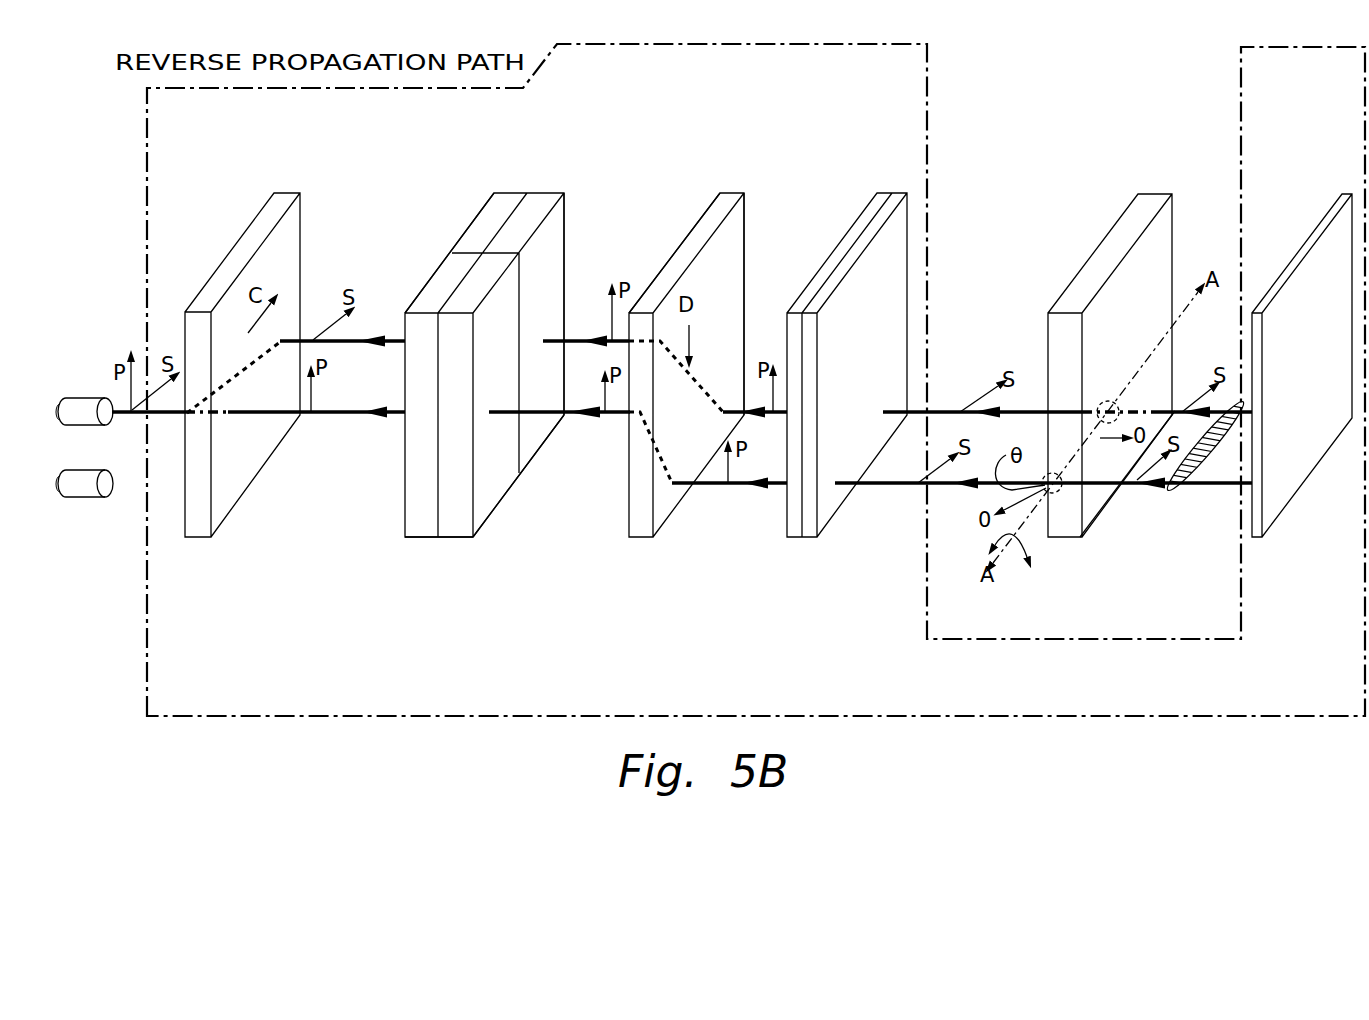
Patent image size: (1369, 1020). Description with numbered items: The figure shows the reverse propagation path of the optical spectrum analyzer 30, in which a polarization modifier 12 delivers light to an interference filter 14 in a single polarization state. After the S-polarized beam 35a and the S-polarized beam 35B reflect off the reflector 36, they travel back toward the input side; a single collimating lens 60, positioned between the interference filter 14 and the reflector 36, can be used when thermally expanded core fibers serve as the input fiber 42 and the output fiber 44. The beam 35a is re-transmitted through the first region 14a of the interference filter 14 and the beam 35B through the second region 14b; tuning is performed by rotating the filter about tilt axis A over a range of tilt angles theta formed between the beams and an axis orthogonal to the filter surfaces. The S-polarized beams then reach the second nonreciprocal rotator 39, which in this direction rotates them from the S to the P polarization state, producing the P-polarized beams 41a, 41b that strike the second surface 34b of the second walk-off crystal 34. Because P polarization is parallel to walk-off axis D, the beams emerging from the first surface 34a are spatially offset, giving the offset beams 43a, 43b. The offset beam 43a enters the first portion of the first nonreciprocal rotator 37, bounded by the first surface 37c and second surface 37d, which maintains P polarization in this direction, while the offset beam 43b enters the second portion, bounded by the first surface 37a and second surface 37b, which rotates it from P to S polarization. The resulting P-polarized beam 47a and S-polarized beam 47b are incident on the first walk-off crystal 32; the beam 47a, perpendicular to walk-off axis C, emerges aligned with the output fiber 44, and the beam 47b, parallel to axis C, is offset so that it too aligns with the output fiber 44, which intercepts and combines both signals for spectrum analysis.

The polarization modifier 12 is at (145, 664).
The interference filter 14 is at (1105, 256).
The first region of the interference filter 14a is at (1062, 490).
The second region of the interference filter 14b is at (1110, 400).
The optical spectrum analyzer 30 is at (1102, 60).
The first walk-off crystal 32 is at (243, 253).
The second walk-off crystal 34 is at (643, 540).
The first surface of the second walk-off crystal 34a is at (703, 207).
The second surface of the second walk-off crystal 34b is at (741, 216).
The S-polarized beam 35a is at (1226, 488).
The S-polarized beam 35B is at (1178, 408).
The reflector 36 is at (1305, 241).
The first nonreciprocal rotator 37 is at (535, 183).
The first surface of the second portion of the first nonreciprocal rotator 37a is at (488, 210).
The second surface of the second portion of the first nonreciprocal rotator 37b is at (557, 221).
The first surface of the first portion of the first nonreciprocal rotator 37c is at (403, 537).
The second surface of the first portion of the first nonreciprocal rotator 37d is at (485, 510).
The second nonreciprocal rotator 39 is at (800, 552).
The P-polarized beam 41a is at (710, 485).
The P-polarized beam 41b is at (728, 408).
The input fiber 42 is at (102, 498).
The offset beam 43a is at (548, 413).
The offset beam 43b is at (572, 341).
The output fiber 44 is at (103, 397).
The P-polarized beam 47a is at (345, 418).
The S-polarized beam 47b is at (348, 345).
The collimating lens 60 is at (1177, 488).